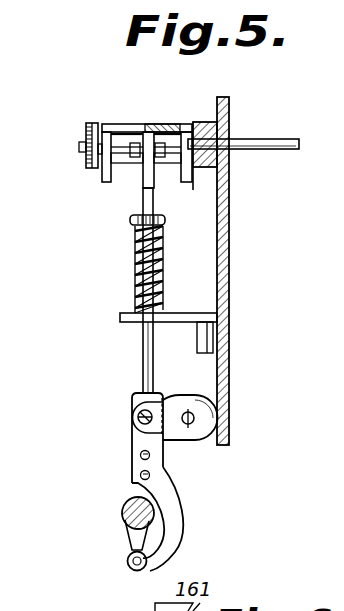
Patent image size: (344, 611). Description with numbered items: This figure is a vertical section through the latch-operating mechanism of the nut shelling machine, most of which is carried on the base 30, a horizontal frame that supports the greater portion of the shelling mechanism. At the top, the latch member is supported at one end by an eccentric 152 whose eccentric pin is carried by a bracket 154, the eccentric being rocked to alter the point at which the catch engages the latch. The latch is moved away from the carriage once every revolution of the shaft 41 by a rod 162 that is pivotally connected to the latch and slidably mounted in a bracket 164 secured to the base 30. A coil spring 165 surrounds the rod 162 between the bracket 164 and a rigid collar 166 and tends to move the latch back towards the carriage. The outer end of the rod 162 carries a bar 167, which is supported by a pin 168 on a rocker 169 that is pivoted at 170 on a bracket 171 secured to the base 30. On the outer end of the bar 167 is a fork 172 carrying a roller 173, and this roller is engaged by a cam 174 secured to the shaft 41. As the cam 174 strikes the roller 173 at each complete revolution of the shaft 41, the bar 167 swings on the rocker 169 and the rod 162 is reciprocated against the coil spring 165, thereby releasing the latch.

The base 30 is at (229, 268).
The shaft 41 is at (122, 508).
The eccentric 152 is at (172, 166).
The bracket 154 is at (88, 169).
The rod 162 is at (143, 199).
The bracket 164 is at (122, 317).
The coil spring 165 is at (135, 263).
The rigid collar 166 is at (130, 219).
The bar 167 is at (141, 436).
The pin 168 is at (139, 411).
The rocker 169 is at (171, 412).
The pivot 170 is at (193, 425).
The bracket 171 is at (205, 407).
The fork 172 is at (170, 513).
The roller 173 is at (129, 564).
The cam 174 is at (128, 538).